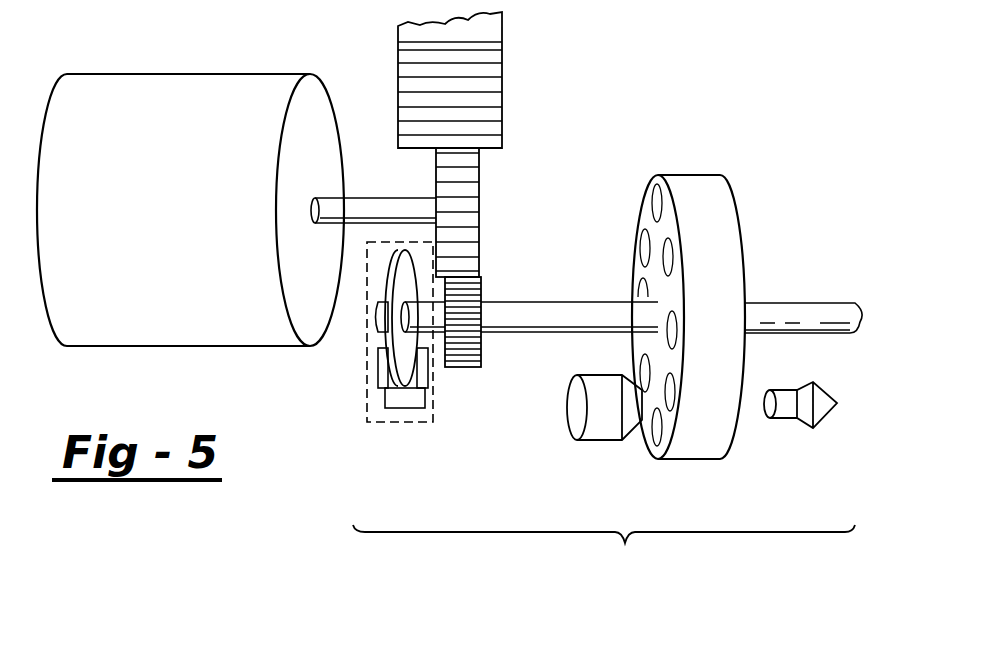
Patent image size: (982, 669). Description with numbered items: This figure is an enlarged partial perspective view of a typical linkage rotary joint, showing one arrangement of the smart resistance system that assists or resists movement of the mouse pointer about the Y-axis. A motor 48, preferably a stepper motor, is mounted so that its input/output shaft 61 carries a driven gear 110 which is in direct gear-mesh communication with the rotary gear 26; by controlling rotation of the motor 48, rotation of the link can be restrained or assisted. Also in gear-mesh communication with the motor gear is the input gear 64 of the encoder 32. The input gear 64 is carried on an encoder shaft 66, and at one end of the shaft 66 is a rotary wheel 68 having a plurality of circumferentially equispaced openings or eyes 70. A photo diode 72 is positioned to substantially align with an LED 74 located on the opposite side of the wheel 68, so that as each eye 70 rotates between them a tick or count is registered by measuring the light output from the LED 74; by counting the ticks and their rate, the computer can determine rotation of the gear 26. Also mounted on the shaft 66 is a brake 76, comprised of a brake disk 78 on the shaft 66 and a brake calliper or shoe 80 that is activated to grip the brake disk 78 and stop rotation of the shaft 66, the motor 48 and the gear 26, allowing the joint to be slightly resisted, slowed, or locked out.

The rotary gear 26 is at (490, 55).
The encoder 32 is at (604, 549).
The motor 48 is at (207, 322).
The input/output shaft 61 is at (383, 208).
The input gear 64 is at (467, 355).
The encoder shaft 66 is at (565, 325).
The rotary wheel 68 is at (697, 440).
The openings or eyes 70 is at (672, 318).
The photo diode 72 is at (600, 428).
The LED 74 is at (806, 410).
The brake 76 is at (398, 428).
The brake disk 78 is at (400, 283).
The brake calliper or shoe 80 is at (383, 375).
The drive gear 110 is at (463, 180).